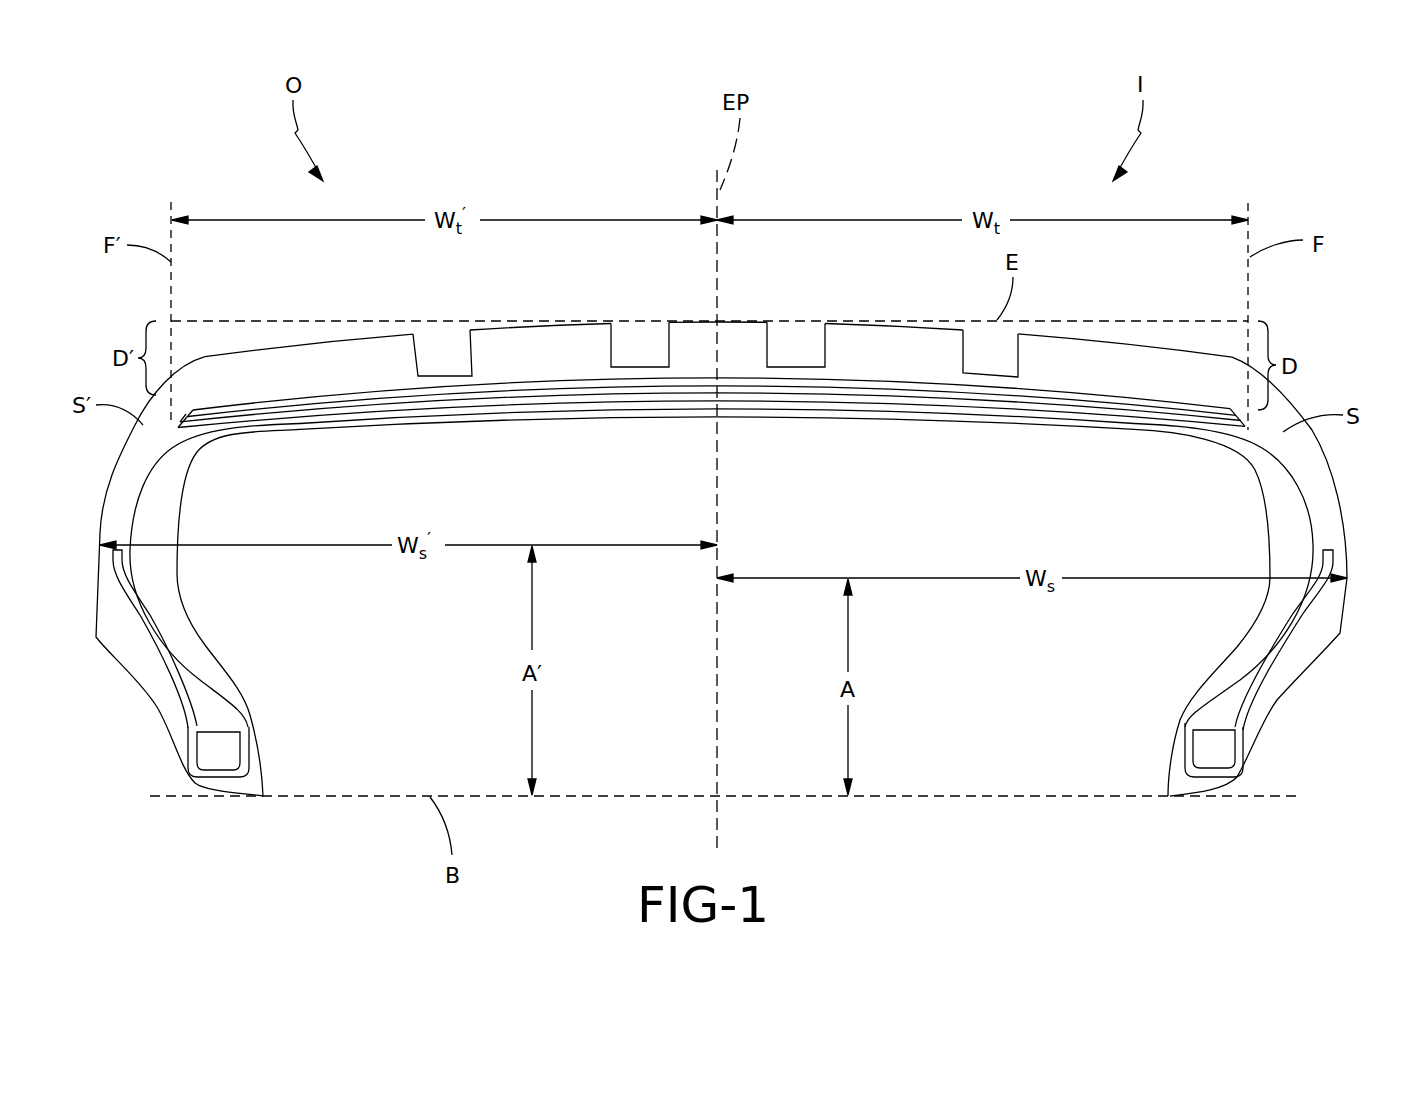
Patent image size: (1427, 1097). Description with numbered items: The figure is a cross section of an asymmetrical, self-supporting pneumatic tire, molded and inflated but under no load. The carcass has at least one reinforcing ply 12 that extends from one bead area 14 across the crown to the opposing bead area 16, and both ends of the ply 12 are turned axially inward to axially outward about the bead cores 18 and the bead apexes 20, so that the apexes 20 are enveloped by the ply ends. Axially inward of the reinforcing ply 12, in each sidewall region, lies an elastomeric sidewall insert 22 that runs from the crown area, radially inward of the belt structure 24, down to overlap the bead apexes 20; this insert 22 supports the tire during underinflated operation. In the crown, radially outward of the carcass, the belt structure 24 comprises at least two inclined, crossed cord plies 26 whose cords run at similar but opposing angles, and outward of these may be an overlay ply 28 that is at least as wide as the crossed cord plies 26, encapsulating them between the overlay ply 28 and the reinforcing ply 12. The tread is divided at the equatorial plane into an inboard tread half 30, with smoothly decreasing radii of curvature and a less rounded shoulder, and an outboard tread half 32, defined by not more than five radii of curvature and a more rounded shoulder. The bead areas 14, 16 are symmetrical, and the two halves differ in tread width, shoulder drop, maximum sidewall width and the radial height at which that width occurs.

The reinforcing ply 12 is at (1305, 498).
The bead area 14 is at (1215, 812).
The bead area 16 is at (223, 812).
The bead core 18 is at (225, 757).
The bead apex 20 is at (210, 710).
The sidewall insert 22 is at (157, 563).
The belt structure 24 is at (1064, 375).
The crossed cord ply 26 is at (592, 400).
The overlay ply 28 is at (243, 405).
The tread half 30 is at (918, 326).
The tread half 32 is at (490, 327).